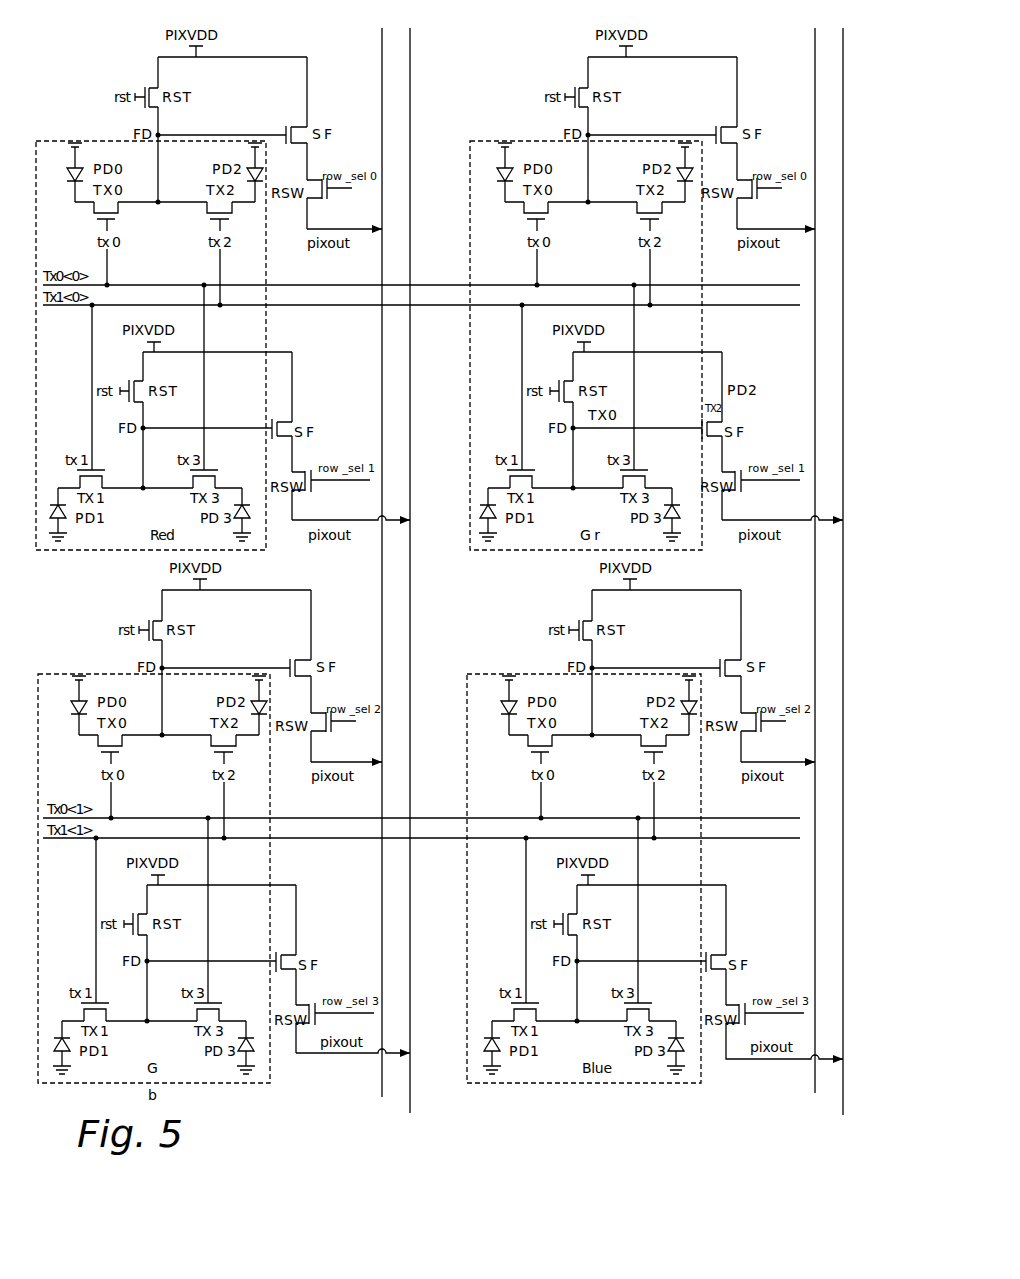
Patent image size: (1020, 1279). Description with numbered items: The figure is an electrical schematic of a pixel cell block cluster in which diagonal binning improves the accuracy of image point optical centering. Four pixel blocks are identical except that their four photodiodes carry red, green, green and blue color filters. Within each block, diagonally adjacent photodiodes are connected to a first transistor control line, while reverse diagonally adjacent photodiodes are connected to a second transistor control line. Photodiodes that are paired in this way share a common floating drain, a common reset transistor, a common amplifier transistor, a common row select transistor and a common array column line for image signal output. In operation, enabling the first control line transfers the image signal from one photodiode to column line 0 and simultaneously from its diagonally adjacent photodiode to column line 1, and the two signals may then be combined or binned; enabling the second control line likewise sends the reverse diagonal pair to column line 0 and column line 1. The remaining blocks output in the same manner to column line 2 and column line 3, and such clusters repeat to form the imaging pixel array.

The column line 0 is at (361, 576).
The column line 1 is at (418, 583).
The column line 2 is at (802, 572).
The column line 3 is at (822, 582).